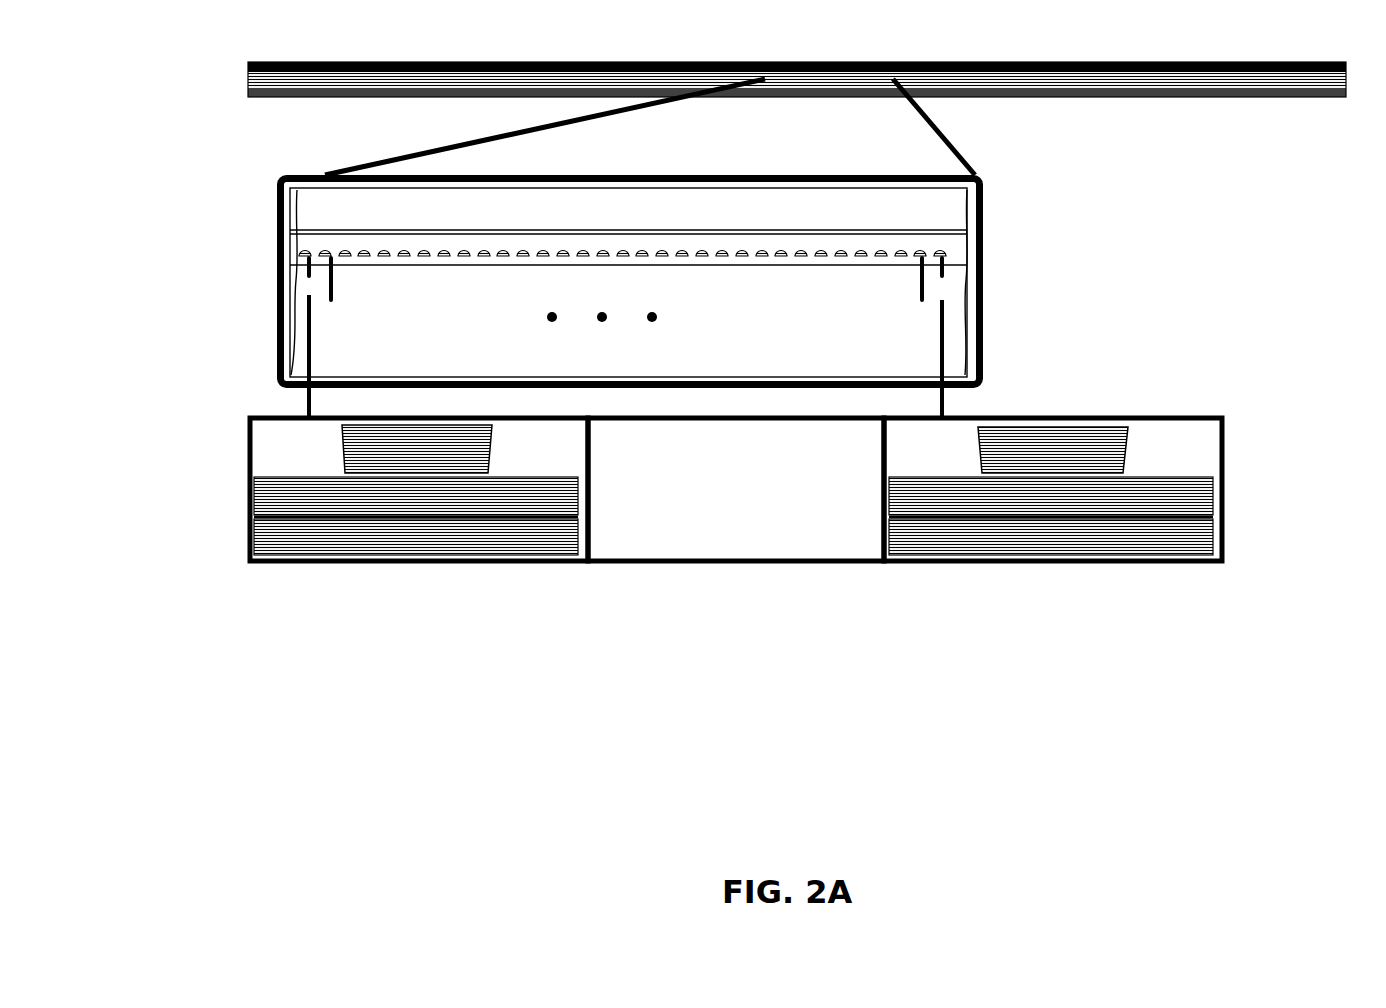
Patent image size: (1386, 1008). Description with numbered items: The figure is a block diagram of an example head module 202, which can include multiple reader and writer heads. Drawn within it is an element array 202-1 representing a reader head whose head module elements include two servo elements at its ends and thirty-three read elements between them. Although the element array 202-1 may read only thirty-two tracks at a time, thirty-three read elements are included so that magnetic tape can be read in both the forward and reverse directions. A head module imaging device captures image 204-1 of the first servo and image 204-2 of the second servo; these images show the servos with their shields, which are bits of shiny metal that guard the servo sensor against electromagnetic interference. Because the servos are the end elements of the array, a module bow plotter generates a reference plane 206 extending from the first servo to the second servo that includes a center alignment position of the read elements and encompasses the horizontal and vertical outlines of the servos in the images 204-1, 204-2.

The head module 202 is at (256, 62).
The element array 202-1 is at (277, 243).
The image 204-1 is at (250, 472).
The image 204-2 is at (1219, 416).
The reference plane 206 is at (676, 563).